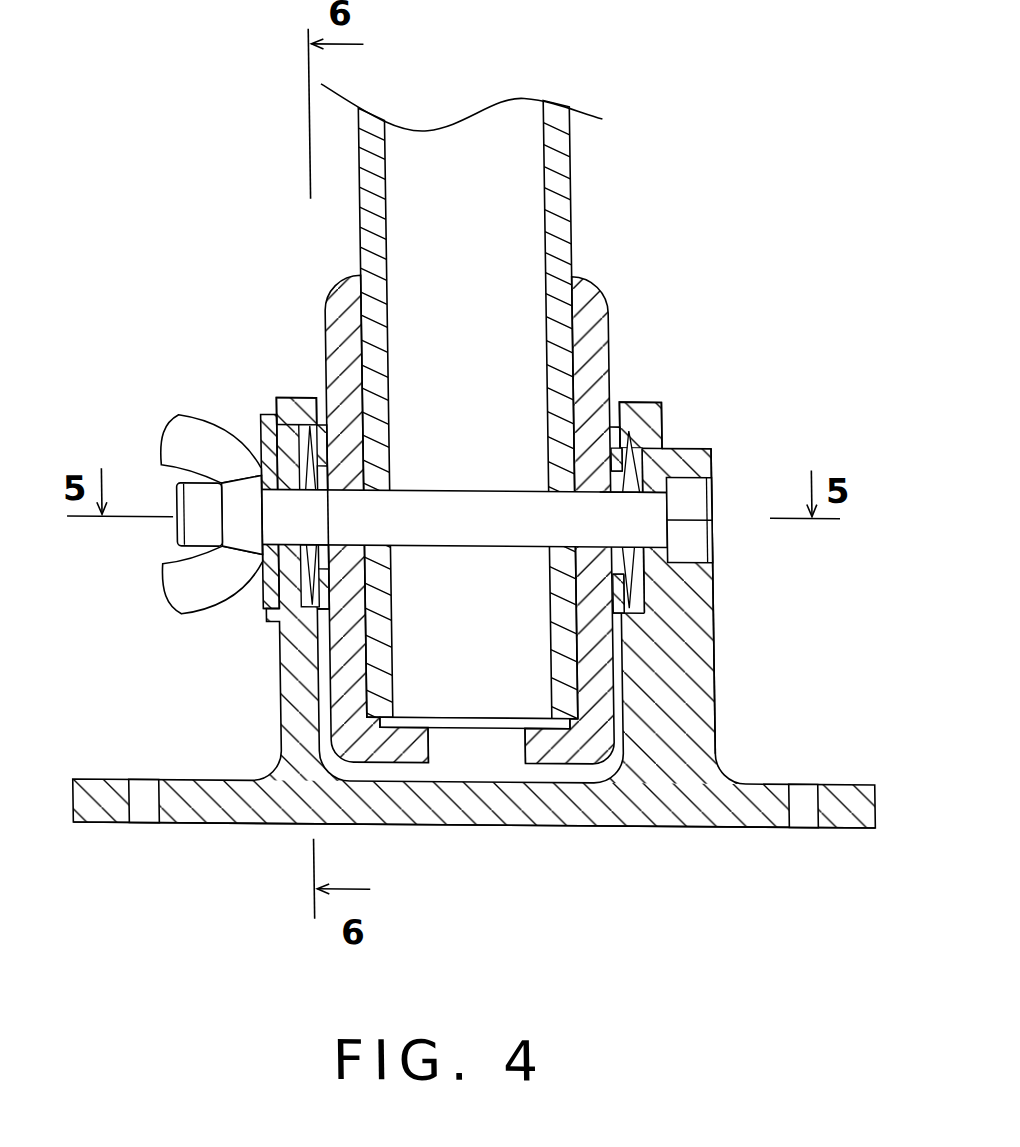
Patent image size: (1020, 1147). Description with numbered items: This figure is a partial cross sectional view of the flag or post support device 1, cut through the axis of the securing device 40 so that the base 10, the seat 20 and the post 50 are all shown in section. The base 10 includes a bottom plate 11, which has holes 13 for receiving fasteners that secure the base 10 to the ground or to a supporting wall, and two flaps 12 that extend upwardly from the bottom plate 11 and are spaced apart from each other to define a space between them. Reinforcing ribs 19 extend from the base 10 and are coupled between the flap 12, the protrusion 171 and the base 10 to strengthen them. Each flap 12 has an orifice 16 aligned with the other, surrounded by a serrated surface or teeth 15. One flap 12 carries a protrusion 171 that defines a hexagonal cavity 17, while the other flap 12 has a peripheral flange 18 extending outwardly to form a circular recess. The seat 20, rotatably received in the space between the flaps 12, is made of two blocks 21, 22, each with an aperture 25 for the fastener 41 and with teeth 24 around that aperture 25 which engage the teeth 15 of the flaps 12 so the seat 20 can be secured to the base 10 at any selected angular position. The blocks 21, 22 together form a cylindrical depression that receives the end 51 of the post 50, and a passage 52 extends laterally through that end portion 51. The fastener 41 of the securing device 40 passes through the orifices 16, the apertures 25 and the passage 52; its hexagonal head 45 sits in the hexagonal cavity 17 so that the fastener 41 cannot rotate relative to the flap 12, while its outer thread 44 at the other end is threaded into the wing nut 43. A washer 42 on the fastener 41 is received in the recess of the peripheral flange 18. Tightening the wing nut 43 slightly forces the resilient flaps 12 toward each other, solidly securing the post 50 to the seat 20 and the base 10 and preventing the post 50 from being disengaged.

The flag or post support device 1 is at (470, 528).
The base 10 is at (471, 597).
The bottom plate 11 is at (472, 810).
The flaps 12 is at (298, 398).
The holes 13 is at (141, 788).
The teeth 15 is at (641, 456).
The orifice 16 is at (657, 472).
The hexagonal cavity 17 is at (712, 530).
The protrusion 171 is at (715, 447).
The reinforcing ribs 19 is at (703, 655).
The seat 20 is at (516, 500).
The block 21 is at (341, 297).
The block 22 is at (602, 304).
The teeth 24 is at (606, 442).
The aperture 25 is at (611, 478).
The securing device 40 is at (442, 612).
The fastener 41 is at (451, 550).
The washer 42 is at (262, 458).
The wing nut 43 is at (177, 428).
The outer thread 44 is at (252, 572).
The hexagonal head 45 is at (699, 497).
The post 50 is at (467, 466).
The end of the post 51 is at (506, 698).
The passage 52 is at (381, 490).
The peripheral flange 18 is at (265, 417).